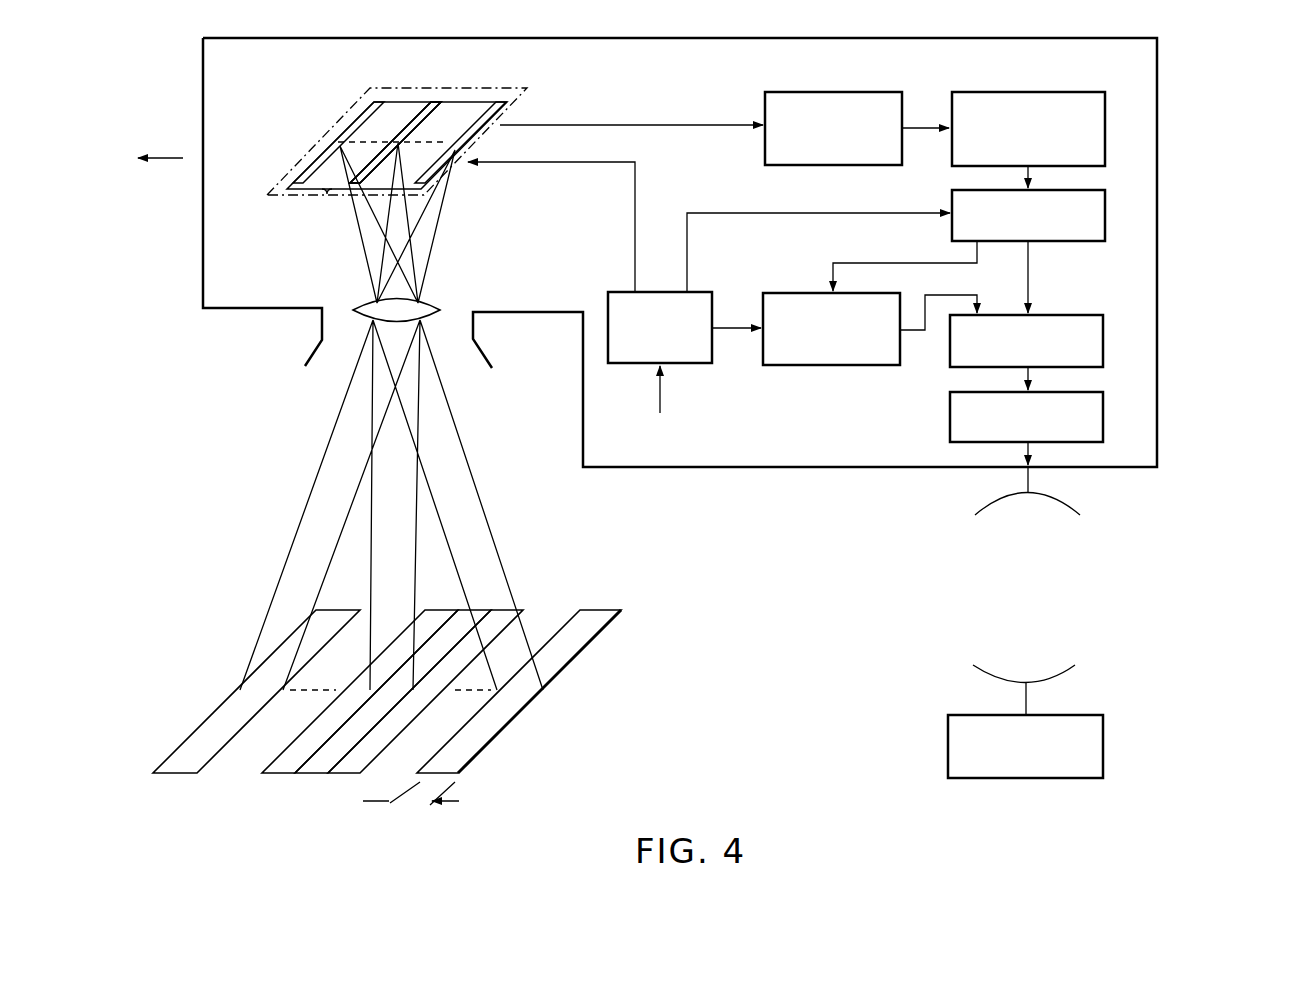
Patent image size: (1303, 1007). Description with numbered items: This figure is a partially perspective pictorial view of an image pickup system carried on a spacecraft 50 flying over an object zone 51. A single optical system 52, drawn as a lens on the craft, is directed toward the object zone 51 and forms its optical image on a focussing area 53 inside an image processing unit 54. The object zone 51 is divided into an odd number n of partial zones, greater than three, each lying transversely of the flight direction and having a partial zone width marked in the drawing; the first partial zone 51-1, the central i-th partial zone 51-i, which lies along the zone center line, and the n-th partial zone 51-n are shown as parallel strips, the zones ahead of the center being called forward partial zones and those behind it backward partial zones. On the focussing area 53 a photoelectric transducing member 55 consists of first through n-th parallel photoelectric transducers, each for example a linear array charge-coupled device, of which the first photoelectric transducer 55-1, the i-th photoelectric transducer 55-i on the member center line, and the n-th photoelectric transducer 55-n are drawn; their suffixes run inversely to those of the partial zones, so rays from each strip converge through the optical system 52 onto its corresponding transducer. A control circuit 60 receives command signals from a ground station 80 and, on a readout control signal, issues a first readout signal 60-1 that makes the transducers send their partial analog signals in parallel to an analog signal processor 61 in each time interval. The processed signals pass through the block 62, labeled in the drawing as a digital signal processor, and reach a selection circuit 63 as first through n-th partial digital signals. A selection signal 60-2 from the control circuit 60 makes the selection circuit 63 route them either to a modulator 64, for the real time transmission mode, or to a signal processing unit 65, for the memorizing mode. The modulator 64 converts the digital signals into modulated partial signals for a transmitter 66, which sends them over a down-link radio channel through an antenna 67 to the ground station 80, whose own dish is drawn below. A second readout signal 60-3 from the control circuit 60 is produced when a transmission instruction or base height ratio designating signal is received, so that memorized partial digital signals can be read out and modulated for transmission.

The spacecraft 50 is at (1214, 117).
The object zone 51 is at (370, 720).
The first partial zone 51-1 is at (178, 774).
The i-th partial zone 51-i is at (313, 775).
The n-th partial zone 51-n is at (465, 772).
The optical system 52 is at (366, 303).
The focussing area 53 is at (313, 150).
The image processing unit 54 is at (202, 78).
The photoelectric transducing member 55 is at (397, 155).
The n-th photoelectric transducer 55-n is at (369, 106).
The i-th photoelectric transducer 55-i is at (440, 101).
The first photoelectric transducer 55-1 is at (503, 103).
The control circuit 60 is at (620, 292).
The first readout signal 60-1 is at (568, 165).
The selection signal 60-2 is at (740, 214).
The second readout signal 60-3 is at (737, 331).
The analog signal processor 61 is at (834, 92).
The digital signal processor 62 is at (1031, 92).
The selection circuit 63 is at (1105, 215).
The modulator 64 is at (1103, 342).
The signal processing unit 65 is at (801, 293).
The transmitter 66 is at (1103, 416).
The antenna 67 is at (1071, 509).
The ground station 80 is at (1103, 746).